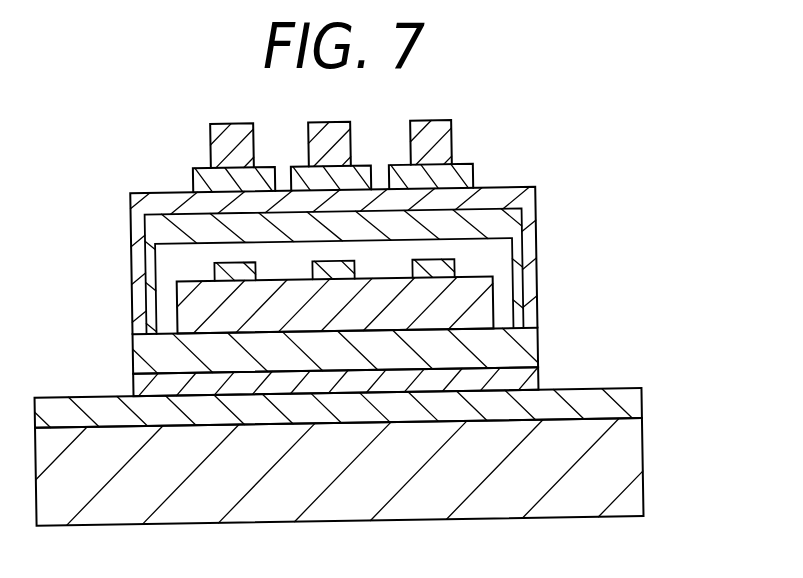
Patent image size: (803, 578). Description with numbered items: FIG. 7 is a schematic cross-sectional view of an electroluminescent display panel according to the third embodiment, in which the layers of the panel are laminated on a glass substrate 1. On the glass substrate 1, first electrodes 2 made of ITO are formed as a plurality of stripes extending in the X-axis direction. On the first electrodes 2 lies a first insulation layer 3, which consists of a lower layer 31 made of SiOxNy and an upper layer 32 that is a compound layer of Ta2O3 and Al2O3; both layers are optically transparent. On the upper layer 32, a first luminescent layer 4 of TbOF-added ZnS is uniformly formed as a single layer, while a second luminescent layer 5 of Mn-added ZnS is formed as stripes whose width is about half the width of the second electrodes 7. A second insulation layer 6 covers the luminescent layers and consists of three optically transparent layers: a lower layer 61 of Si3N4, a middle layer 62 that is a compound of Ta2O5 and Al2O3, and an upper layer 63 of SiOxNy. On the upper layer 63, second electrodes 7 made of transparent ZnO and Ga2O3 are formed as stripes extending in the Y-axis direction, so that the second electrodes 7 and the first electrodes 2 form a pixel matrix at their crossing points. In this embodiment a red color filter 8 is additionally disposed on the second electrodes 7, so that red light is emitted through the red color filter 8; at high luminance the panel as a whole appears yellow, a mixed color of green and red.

The glass substrate 1 is at (612, 463).
The first electrodes 2 is at (608, 406).
The first insulation layer 3 is at (426, 351).
The lower layer 31 is at (522, 382).
The upper layer 32 is at (518, 343).
The first luminescent layer 4 is at (480, 309).
The second luminescent layer 5 is at (440, 267).
The second insulation layer 6 is at (424, 244).
The lower layer 61 is at (507, 255).
The middle layer 62 is at (512, 222).
The upper layer 63 is at (518, 198).
The second electrodes 7 is at (460, 176).
The red color filter 8 is at (440, 142).